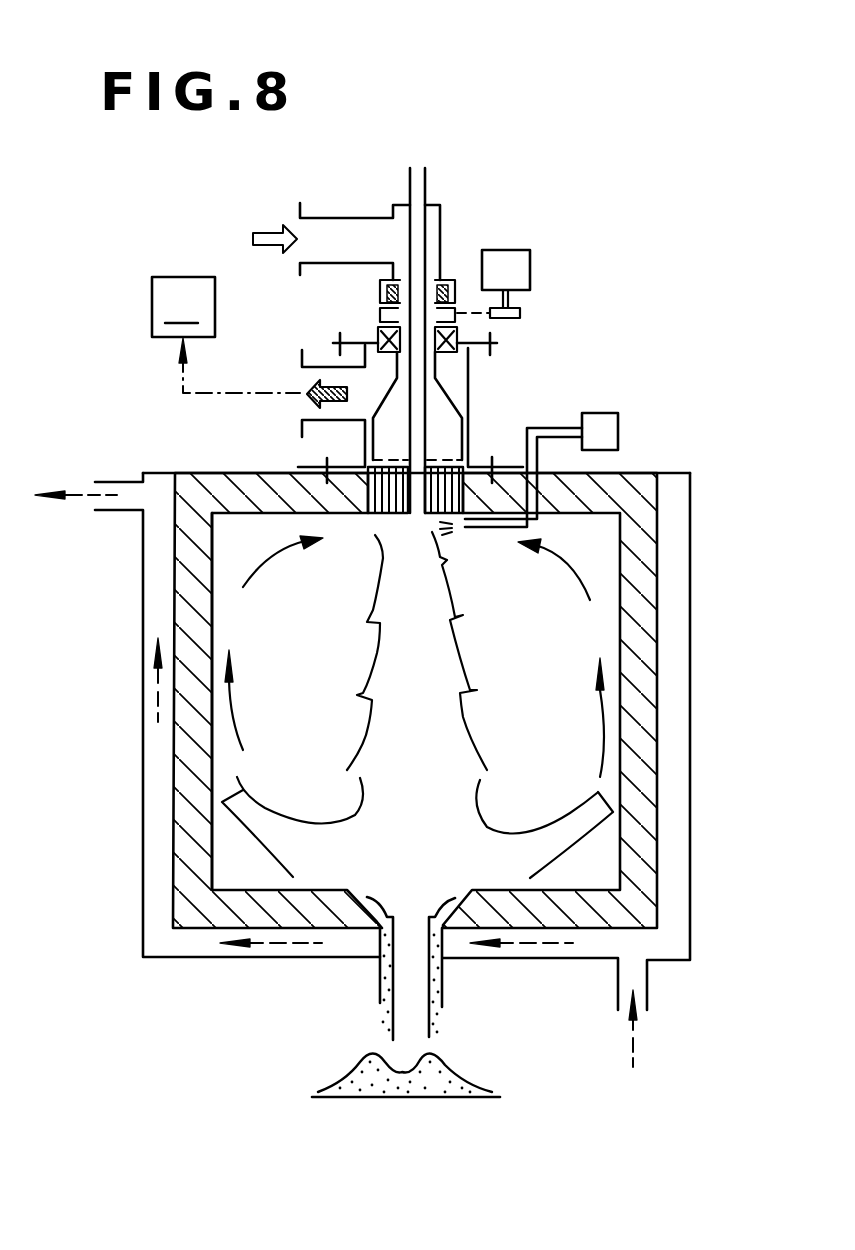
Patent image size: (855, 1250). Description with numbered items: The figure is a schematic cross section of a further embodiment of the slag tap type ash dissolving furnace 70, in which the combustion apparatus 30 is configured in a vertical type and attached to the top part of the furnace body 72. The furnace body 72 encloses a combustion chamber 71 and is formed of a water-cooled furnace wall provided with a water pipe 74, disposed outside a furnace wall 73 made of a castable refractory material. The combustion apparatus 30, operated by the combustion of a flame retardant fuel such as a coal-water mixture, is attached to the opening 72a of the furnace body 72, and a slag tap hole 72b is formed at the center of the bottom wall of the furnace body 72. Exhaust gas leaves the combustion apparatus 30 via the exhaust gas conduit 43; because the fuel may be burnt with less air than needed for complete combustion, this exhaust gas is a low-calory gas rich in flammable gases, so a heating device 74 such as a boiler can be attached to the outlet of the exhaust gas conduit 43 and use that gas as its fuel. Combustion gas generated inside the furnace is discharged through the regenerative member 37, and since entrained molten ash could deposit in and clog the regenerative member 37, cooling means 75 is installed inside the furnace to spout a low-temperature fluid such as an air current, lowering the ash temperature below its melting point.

The combustion apparatus 30 is at (507, 212).
The regenerative member 37 is at (375, 515).
The exhaust gas conduit 43 is at (300, 378).
The slag tap type ash dissolving furnace 70 is at (86, 250).
The combustion chamber 71 is at (312, 680).
The furnace body 72 is at (135, 617).
The opening 72a is at (370, 514).
The slag tap hole 72b is at (422, 922).
The furnace wall 73 is at (213, 742).
The water pipe / heating device 74 is at (153, 760).
The cooling means 75 is at (612, 402).